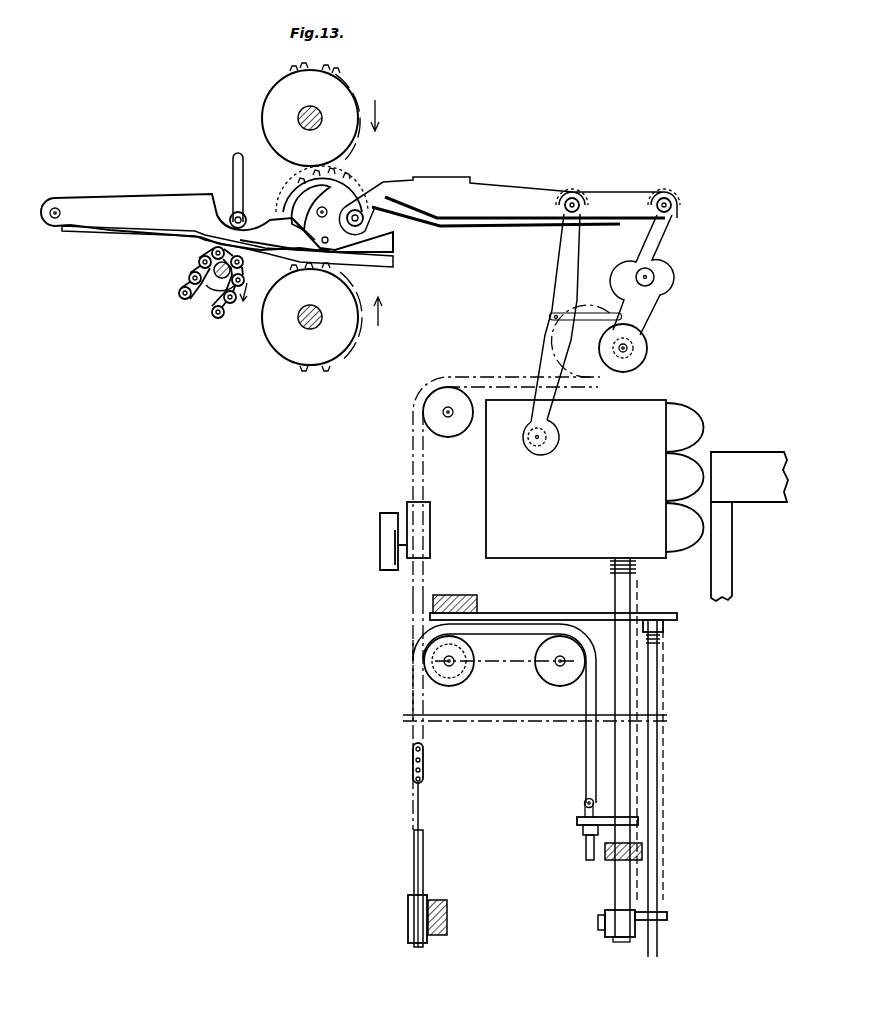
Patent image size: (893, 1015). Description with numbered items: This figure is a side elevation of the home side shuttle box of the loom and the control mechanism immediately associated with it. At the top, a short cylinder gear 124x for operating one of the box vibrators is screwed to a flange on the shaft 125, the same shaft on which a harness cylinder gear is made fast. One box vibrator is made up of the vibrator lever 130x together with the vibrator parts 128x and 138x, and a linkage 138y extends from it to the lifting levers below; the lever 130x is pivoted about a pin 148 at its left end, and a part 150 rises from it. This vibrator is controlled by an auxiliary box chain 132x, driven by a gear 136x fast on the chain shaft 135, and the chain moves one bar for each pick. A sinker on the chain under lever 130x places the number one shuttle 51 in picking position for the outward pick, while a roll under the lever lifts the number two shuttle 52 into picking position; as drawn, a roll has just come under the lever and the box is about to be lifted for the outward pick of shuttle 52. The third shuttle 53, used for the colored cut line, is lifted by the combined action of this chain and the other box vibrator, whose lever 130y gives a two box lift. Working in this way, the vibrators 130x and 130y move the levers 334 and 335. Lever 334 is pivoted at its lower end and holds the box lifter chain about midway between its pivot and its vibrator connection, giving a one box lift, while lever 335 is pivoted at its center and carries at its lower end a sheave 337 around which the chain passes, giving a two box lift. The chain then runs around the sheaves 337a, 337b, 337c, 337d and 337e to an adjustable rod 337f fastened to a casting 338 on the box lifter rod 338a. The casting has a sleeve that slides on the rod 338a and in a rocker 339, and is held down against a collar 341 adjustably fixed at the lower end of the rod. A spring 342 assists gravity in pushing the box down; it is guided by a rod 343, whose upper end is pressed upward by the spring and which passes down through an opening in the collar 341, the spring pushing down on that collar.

The short cylinder gear 124x is at (340, 92).
The shaft 125 is at (304, 122).
The gear segment 128x is at (350, 186).
The vibrator lever 130x is at (150, 200).
The vibrator lever 130y is at (162, 236).
The auxiliary box chain 132x is at (190, 280).
The chain shaft 135 is at (232, 270).
The gear 136x is at (210, 298).
The vibrator part 138x is at (494, 190).
The link 138y is at (612, 197).
The pivot pin 148 is at (55, 222).
The rod 150 is at (235, 162).
The lever 334 is at (556, 266).
The lever 335 is at (660, 258).
The sheave 337 is at (647, 349).
The sheave 337a is at (451, 432).
The sheave 337b is at (408, 915).
The sheave 337c is at (415, 503).
The sheave 337d is at (470, 674).
The sheave 337e is at (545, 656).
The adjustable rod 337f is at (584, 806).
The casting 338 is at (576, 826).
The box lifter rod 338a is at (626, 601).
The rocker 339 is at (606, 857).
The collar 341 is at (660, 915).
The spring 342 is at (660, 628).
The rod 343 is at (654, 773).
The number one shuttle 51 is at (670, 426).
The number two shuttle 52 is at (670, 477).
The cam 53 is at (670, 525).